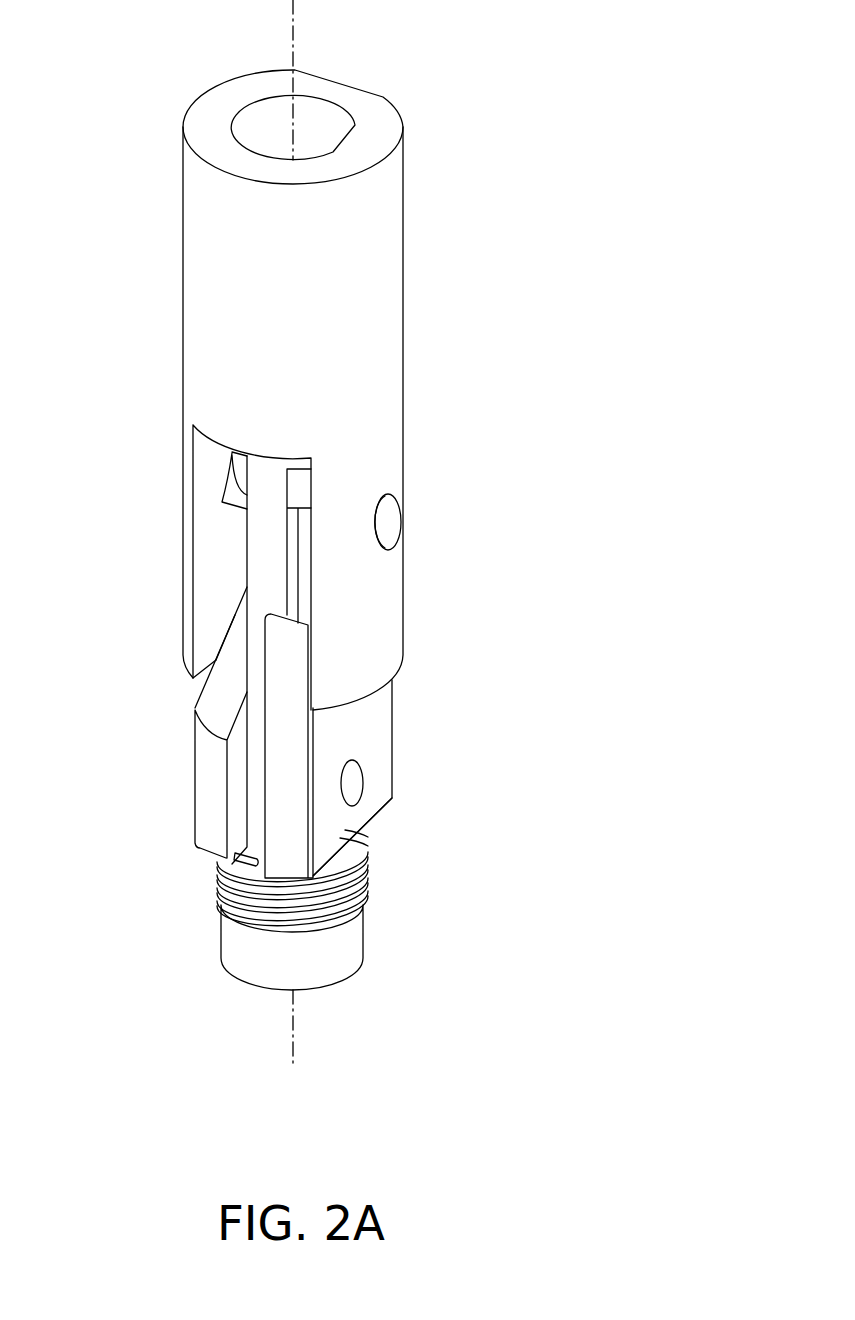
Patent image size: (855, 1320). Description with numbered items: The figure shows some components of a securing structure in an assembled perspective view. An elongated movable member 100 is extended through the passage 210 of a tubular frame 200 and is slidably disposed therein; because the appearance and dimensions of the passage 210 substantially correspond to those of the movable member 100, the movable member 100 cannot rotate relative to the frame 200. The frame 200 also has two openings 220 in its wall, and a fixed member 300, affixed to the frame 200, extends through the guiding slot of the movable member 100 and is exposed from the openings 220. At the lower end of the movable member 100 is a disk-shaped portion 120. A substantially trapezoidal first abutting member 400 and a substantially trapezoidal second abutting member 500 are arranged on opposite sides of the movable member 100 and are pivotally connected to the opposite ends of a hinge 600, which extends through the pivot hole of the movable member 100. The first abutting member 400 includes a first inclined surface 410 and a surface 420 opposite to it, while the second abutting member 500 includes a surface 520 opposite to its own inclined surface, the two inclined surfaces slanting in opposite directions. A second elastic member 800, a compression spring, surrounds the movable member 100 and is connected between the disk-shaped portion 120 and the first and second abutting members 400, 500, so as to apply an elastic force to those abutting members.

The movable member 100 is at (257, 533).
The disk-shaped portion 120 is at (345, 953).
The frame 200 is at (390, 248).
The passage 210 is at (315, 113).
The openings 220 is at (193, 448).
The fixed member 300 is at (388, 517).
The first abutting member 400 is at (203, 753).
The first inclined surface 410 is at (227, 663).
The surface 420 is at (215, 860).
The second abutting member 500 is at (383, 713).
The surface 520 is at (377, 817).
The hinge 600 is at (355, 777).
The second elastic member 800 is at (217, 882).